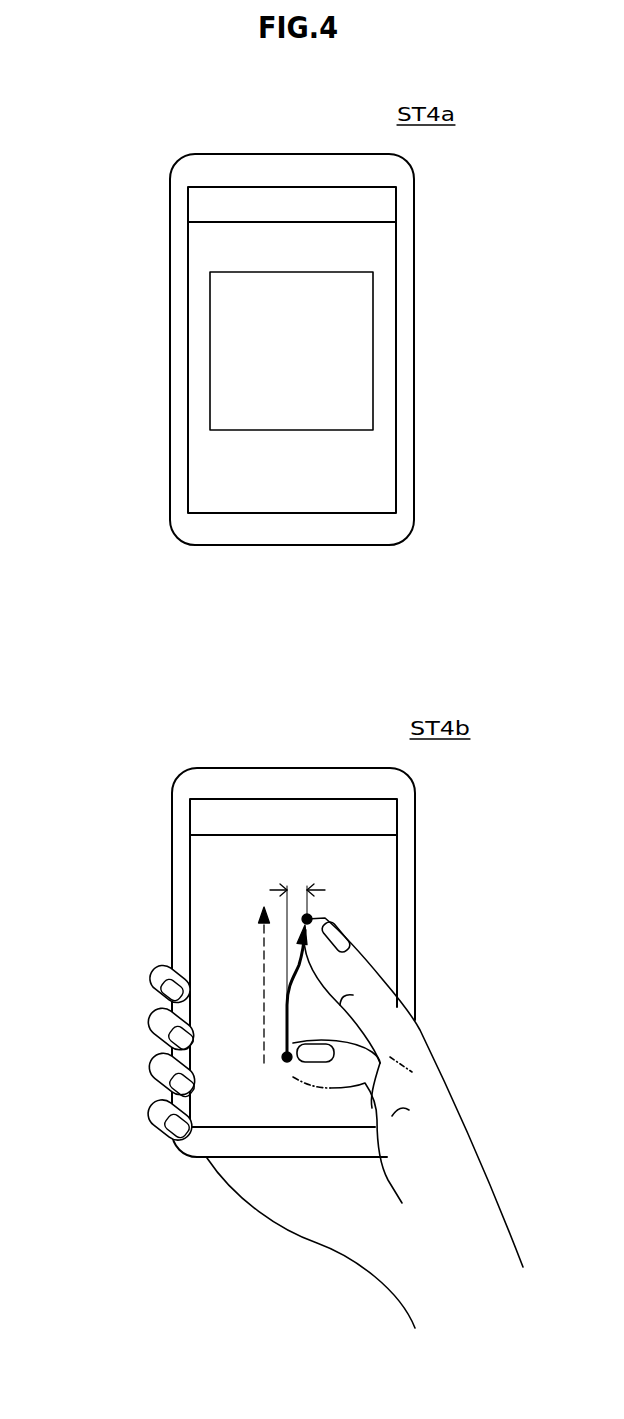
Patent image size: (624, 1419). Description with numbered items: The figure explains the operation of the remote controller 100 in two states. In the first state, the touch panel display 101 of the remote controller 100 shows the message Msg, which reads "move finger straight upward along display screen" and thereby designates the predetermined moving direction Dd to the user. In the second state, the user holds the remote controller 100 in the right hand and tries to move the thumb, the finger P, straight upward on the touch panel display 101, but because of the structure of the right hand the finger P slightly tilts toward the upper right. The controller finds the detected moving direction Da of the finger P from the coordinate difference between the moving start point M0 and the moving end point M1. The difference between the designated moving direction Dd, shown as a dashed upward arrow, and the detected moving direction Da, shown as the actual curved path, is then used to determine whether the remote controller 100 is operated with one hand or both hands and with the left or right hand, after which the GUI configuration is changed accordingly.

The remote controller 100 is at (413, 200).
The touch panel display 101 is at (395, 248).
The message Msg is at (373, 325).
The moving end point M1 is at (308, 919).
The finger P is at (384, 985).
The predetermined moving direction Dd is at (263, 933).
The moving direction Da is at (293, 967).
The moving start point M0 is at (287, 1057).